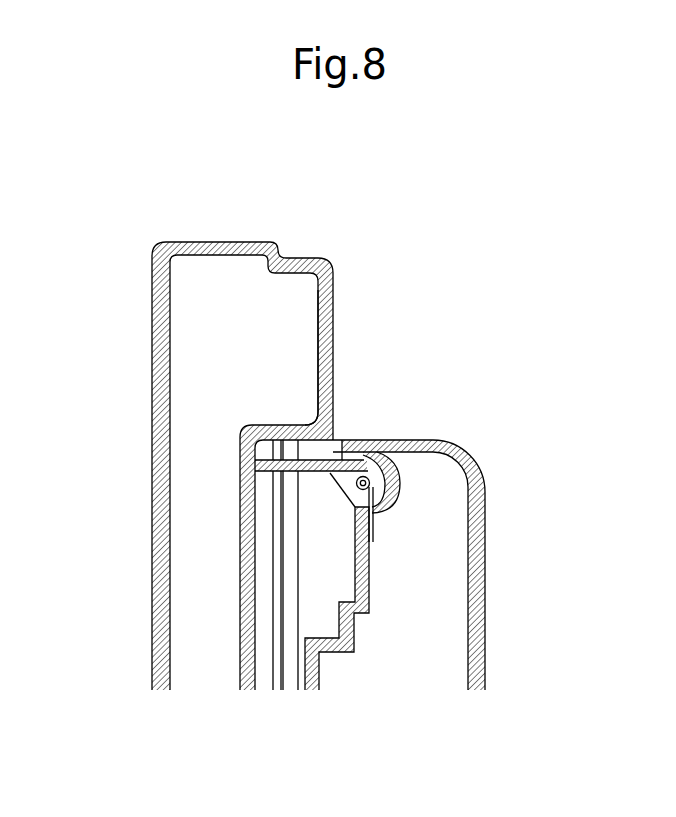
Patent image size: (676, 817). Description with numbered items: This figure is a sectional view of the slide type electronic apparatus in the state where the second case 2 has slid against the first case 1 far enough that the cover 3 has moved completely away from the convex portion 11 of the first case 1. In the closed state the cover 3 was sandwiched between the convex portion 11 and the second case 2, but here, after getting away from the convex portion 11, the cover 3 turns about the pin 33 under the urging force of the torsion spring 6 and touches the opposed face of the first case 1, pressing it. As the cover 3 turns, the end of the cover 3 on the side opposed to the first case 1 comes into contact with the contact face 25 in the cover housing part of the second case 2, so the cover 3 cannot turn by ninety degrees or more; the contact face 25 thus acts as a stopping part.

The first case 1 is at (153, 268).
The convex portion 11 is at (317, 367).
The second case 2 is at (486, 550).
The cover 3 is at (335, 438).
The contact face 25 is at (397, 456).
The pin 33 is at (416, 447).
The torsion spring 6 is at (402, 486).